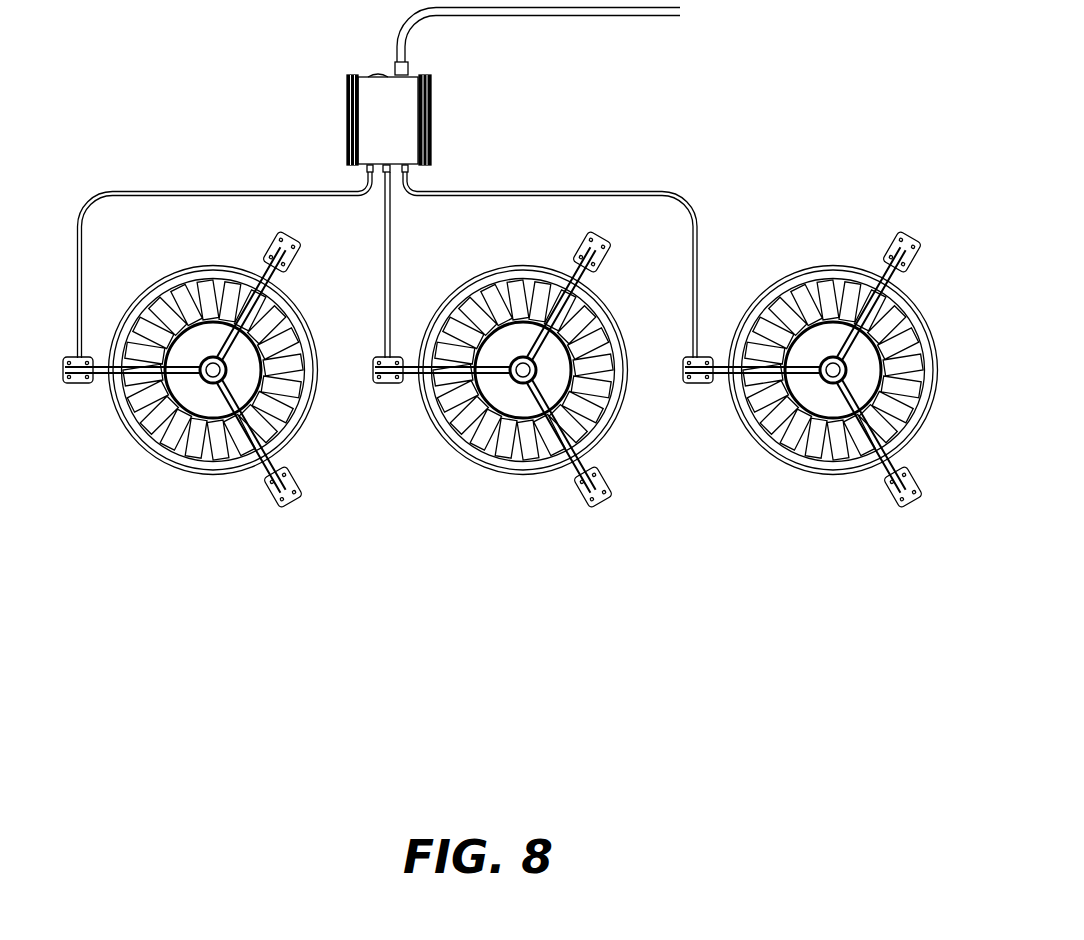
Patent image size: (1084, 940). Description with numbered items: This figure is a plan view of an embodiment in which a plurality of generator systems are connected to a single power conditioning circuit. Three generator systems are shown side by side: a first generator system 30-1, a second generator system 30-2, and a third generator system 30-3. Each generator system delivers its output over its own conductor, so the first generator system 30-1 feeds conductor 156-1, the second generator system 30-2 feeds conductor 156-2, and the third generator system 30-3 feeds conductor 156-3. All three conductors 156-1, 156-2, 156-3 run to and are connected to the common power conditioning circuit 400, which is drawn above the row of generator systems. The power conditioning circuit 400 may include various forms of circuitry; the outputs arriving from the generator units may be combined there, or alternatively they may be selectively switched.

The power conditioning circuit 400 is at (402, 122).
The conductor 156-1 is at (131, 193).
The conductor 156-2 is at (392, 272).
The conductor 156-3 is at (700, 222).
The first generator system 30-1 is at (188, 494).
The second generator system 30-2 is at (508, 489).
The third generator system 30-3 is at (816, 489).